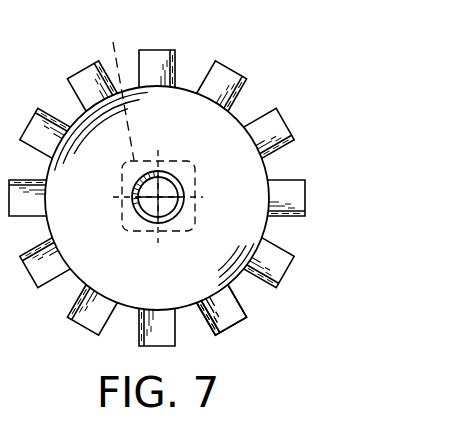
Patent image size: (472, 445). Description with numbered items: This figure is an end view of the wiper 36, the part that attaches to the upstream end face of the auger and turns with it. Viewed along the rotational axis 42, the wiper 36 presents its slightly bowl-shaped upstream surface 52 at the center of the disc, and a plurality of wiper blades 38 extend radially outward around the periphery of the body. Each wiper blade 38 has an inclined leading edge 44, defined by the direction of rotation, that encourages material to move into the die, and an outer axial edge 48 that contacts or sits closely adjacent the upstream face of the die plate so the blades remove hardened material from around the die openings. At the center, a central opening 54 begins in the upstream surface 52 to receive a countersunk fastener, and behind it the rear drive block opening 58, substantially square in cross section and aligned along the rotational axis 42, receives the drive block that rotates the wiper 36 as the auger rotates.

The wiper 36 is at (251, 98).
The upstream surface 52 is at (172, 128).
The outer axial edge 48 is at (281, 143).
The wiper blades 38 is at (281, 255).
The inclined leading edge 44 is at (228, 307).
The rear drive block opening 58 is at (148, 127).
The rotational axis 42 is at (162, 192).
The central opening 54 is at (148, 205).